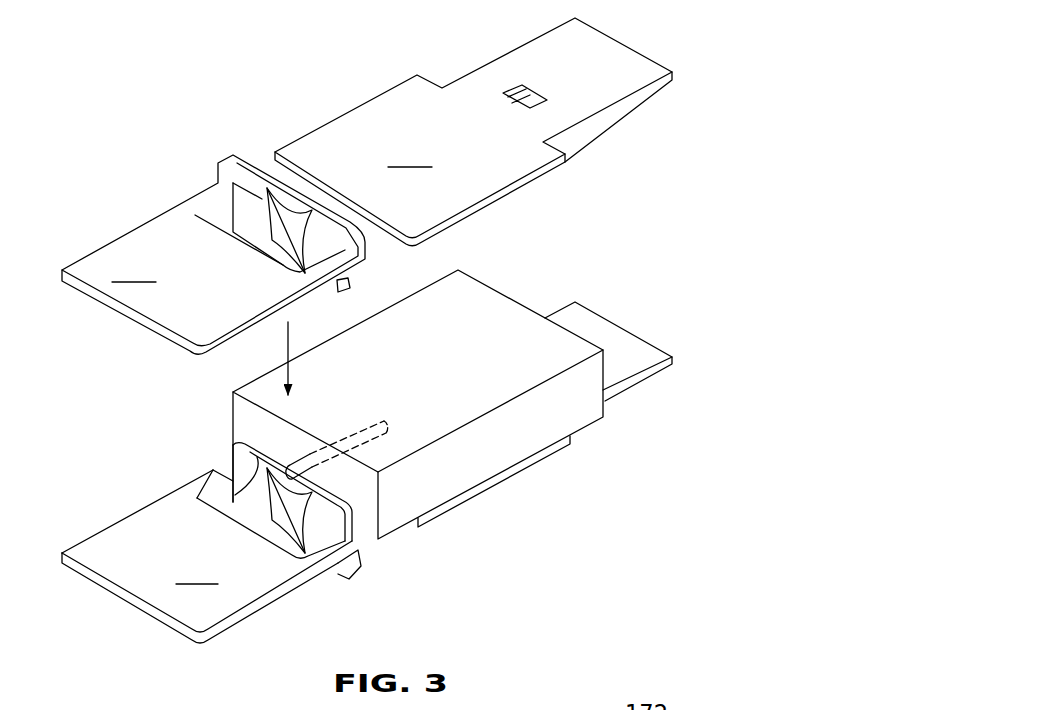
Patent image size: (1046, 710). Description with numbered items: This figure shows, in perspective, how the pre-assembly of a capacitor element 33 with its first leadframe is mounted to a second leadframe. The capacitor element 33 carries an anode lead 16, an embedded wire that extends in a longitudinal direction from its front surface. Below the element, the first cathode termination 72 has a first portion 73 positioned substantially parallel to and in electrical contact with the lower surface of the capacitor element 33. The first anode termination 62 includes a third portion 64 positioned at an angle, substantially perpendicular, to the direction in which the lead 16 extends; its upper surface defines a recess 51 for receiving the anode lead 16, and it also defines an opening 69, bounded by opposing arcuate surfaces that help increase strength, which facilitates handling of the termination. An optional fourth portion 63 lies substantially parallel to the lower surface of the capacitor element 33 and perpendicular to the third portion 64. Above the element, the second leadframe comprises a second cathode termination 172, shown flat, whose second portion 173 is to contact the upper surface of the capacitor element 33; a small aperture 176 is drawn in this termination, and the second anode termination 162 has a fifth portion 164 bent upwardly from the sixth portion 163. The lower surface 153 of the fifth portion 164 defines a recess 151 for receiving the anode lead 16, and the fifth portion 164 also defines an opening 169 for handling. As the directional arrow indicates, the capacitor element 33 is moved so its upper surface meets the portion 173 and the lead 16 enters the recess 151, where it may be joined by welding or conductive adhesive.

The second cathode termination 172 is at (504, 126).
The second portion 173 is at (473, 128).
The slot 176 is at (528, 92).
The second anode termination 162 is at (228, 244).
The sixth portion 163 is at (213, 254).
The fifth portion 164 is at (240, 187).
The opening 169 is at (285, 223).
The lower surface 153 is at (333, 296).
The recess 151 is at (287, 258).
The capacitor element 33 is at (418, 383).
The anode lead 16 is at (345, 442).
The first cathode termination 72 is at (623, 325).
The first portion 73 is at (510, 477).
The first anode termination 62 is at (257, 554).
The fourth portion 63 is at (207, 556).
The third portion 64 is at (332, 523).
The recess 51 is at (233, 450).
The opening 69 is at (289, 510).